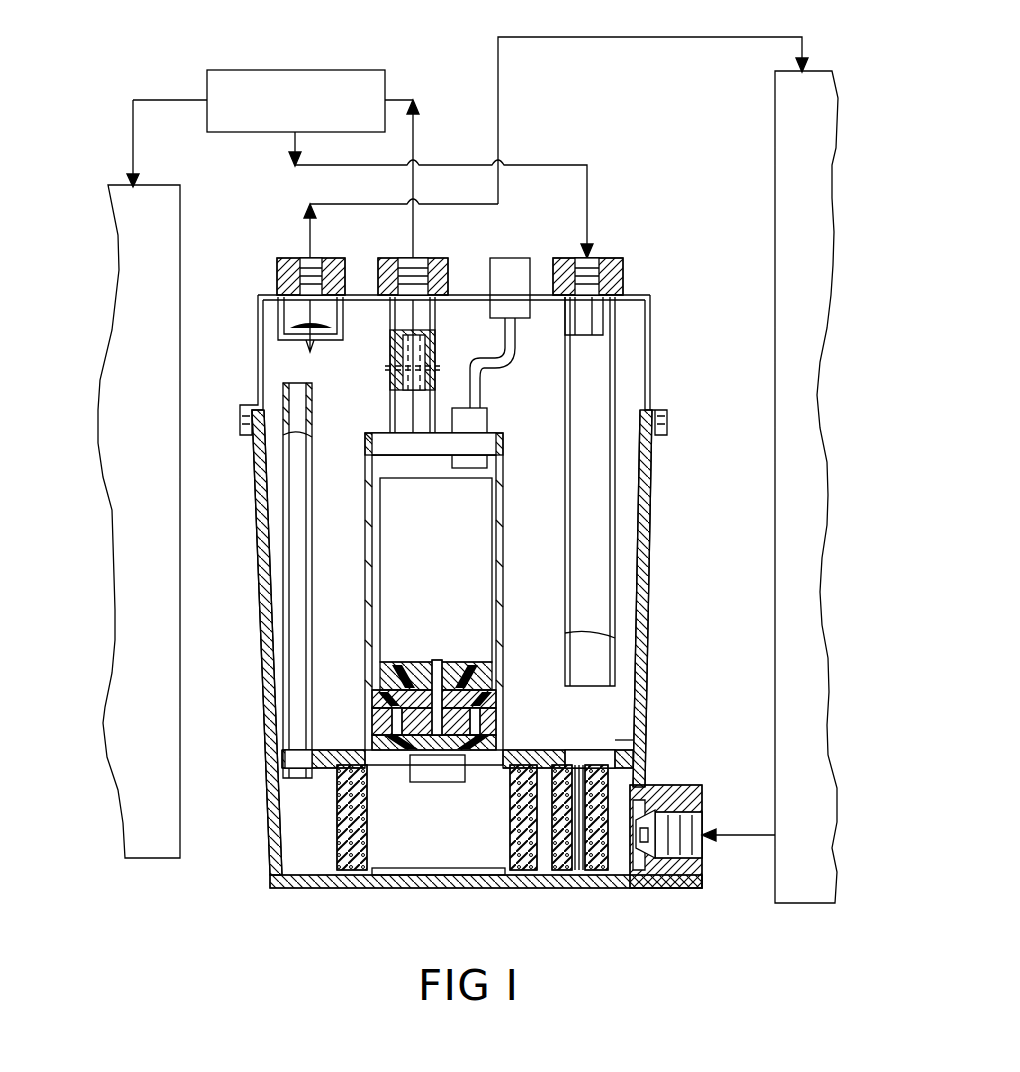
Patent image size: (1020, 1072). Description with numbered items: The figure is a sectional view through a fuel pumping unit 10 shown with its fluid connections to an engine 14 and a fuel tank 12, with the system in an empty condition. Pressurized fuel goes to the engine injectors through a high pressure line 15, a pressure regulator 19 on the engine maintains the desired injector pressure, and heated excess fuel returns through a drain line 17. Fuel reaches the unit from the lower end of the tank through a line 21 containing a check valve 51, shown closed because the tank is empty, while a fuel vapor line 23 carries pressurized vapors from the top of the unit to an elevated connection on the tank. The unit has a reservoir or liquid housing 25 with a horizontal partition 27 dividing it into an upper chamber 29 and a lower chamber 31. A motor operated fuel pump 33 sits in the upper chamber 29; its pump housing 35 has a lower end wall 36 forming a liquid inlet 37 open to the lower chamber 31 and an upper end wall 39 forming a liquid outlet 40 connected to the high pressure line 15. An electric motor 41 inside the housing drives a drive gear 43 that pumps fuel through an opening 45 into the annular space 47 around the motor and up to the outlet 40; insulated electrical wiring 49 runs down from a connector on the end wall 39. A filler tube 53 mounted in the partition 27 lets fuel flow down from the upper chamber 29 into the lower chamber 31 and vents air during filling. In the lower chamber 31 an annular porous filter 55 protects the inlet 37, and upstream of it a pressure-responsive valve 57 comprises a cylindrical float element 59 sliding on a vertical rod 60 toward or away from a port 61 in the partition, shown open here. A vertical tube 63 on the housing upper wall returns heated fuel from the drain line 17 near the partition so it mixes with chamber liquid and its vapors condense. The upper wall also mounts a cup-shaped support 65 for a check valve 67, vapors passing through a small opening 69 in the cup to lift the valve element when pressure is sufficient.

The fuel pumping unit 10 is at (282, 888).
The fuel tank 12 is at (810, 602).
The engine 14 is at (135, 636).
The high pressure line 15 is at (413, 140).
The drain line 17 is at (295, 172).
The pressure regulator 19 is at (368, 70).
The line 21 is at (745, 835).
The fuel vapor line 23 is at (668, 37).
The reservoir or liquid housing 25 is at (652, 488).
The horizontal partition 27 is at (540, 750).
The upper chamber 29 is at (262, 622).
The lower chamber 31 is at (300, 858).
The motor operated fuel pump 33 is at (498, 540).
The pump housing 35 is at (365, 568).
The lower end wall 36 is at (365, 726).
The liquid inlet 37 is at (425, 782).
The upper end wall 39 is at (487, 445).
The liquid outlet 40 is at (392, 420).
The electric motor 41 is at (444, 566).
The drive gear 43 is at (412, 672).
The opening 45 is at (500, 690).
The annular space 47 is at (372, 492).
The insulated electrical wiring 49 is at (505, 358).
The check valve 51 is at (660, 880).
The filler tube 53 is at (285, 568).
The annular porous filter 55 is at (510, 812).
The pressure-responsive valve 57 is at (555, 852).
The cylindrical float element 59 is at (597, 862).
The vertical rod 60 is at (578, 862).
The port 61 is at (600, 748).
The vertical tube 63 is at (647, 398).
The cup-shaped support 65 is at (278, 328).
The check valve 67 is at (312, 320).
The opening 69 is at (300, 340).